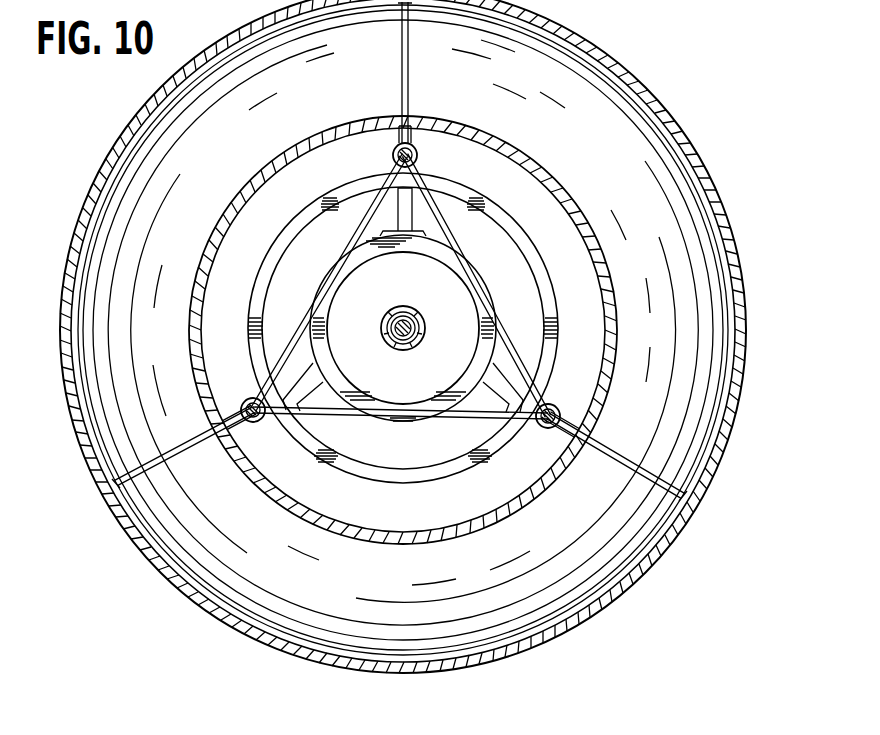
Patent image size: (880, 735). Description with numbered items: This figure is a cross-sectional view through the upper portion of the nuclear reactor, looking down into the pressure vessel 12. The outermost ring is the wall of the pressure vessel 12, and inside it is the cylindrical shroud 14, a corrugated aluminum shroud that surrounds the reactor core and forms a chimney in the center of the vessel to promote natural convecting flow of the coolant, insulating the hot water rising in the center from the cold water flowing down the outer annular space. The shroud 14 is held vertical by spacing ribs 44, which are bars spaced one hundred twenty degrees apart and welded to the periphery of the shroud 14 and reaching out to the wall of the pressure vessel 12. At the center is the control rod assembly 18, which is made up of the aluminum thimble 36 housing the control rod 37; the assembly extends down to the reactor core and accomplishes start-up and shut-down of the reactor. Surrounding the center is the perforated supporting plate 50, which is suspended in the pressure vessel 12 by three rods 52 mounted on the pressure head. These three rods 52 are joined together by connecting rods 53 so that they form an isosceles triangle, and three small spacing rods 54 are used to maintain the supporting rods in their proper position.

The pressure vessel 12 is at (718, 220).
The cylindrical shroud 14 is at (592, 232).
The control rod assembly 18 is at (405, 303).
The aluminum thimble 36 is at (413, 337).
The control rod 37 is at (413, 318).
The spacing ribs 44 is at (410, 60).
The perforated supporting plate 50 is at (500, 222).
The rods 52 is at (419, 156).
The connecting rods 53 is at (364, 217).
The spacing rods 54 is at (420, 122).